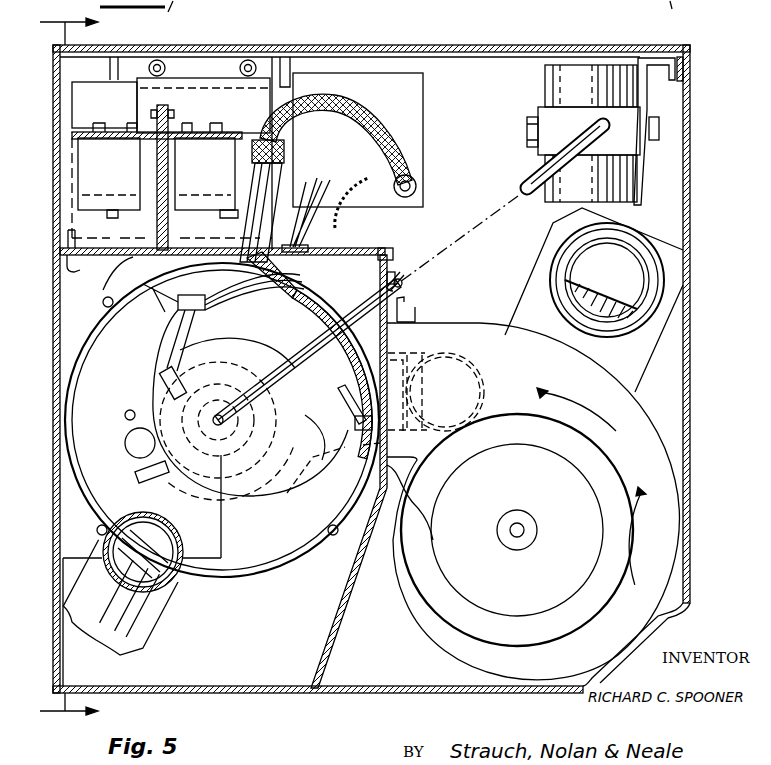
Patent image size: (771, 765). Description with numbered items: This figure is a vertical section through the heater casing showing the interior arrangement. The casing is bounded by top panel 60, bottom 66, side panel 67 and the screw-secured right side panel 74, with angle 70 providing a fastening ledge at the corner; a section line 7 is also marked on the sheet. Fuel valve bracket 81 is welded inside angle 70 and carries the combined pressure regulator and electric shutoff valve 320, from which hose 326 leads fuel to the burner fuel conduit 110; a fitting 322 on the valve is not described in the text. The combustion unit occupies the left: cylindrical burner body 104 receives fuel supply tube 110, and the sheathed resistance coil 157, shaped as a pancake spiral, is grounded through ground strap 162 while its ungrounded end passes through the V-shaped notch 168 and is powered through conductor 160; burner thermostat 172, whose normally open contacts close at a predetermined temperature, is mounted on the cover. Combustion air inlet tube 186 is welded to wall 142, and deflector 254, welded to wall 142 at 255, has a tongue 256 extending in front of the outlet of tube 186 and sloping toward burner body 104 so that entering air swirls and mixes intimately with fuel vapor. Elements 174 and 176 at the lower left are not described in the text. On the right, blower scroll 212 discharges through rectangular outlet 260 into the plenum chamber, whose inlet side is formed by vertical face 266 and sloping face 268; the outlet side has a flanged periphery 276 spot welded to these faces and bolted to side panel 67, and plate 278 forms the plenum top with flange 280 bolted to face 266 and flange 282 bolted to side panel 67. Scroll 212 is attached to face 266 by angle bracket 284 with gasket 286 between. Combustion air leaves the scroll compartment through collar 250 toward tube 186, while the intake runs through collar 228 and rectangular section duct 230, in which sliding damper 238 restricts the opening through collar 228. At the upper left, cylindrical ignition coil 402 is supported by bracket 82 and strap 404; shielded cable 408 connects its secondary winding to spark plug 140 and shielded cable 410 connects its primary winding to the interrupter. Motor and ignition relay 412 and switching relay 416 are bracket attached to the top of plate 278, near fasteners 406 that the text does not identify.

The section line 7- 7 is at (75, 368).
The top panel 60 is at (470, 46).
The bottom 66 is at (182, 686).
The side panel 67 is at (54, 357).
The angle 70 is at (690, 67).
The panel 74 is at (691, 172).
The fuel valve bracket 81 is at (647, 95).
The ignition coil bracket 82 is at (290, 55).
The cylindrical burner body 104 is at (282, 308).
The fuel supply tube 110 is at (370, 298).
The spark plug 140 is at (250, 190).
The wall 142 is at (303, 556).
The sheathed resistance coil 157 is at (236, 484).
The conductor 160 is at (208, 312).
The ground strap 162 is at (236, 342).
The V-shaped notch 168 is at (180, 382).
The burner thermostat 172 is at (135, 452).
The cylinder 174 is at (136, 620).
The ring 176 is at (176, 578).
The combustion air inlet tube 186 is at (403, 352).
The scroll 212 is at (420, 636).
The collar 228 is at (564, 256).
The rectangular section duct 230 is at (550, 264).
The sliding damper 238 is at (590, 290).
The collar 250 is at (476, 364).
The deflector 254 is at (380, 380).
The weld 255 is at (352, 458).
The tongue 256 is at (305, 484).
The rectangular outlet 260 is at (432, 492).
The vertical face 266 is at (434, 532).
The sloping face 268 is at (338, 615).
The flanged periphery 276 is at (378, 272).
The plate 278 is at (99, 282).
The flange 280 is at (404, 250).
The flange 282 is at (88, 267).
The angle bracket 284 is at (416, 310).
The gasket 286 is at (408, 283).
The combined pressure regulator and electric shutoff valve 320 is at (546, 118).
The terminal 322 is at (660, 125).
The hose 326 is at (534, 182).
The ignition coil 402 is at (413, 96).
The strap 404 is at (140, 102).
The screw 406 is at (158, 60).
The shielded cable 408 is at (366, 123).
The shielded cable 410 is at (343, 222).
The motor and ignition relay 412 is at (122, 166).
The switching relay 416 is at (221, 166).